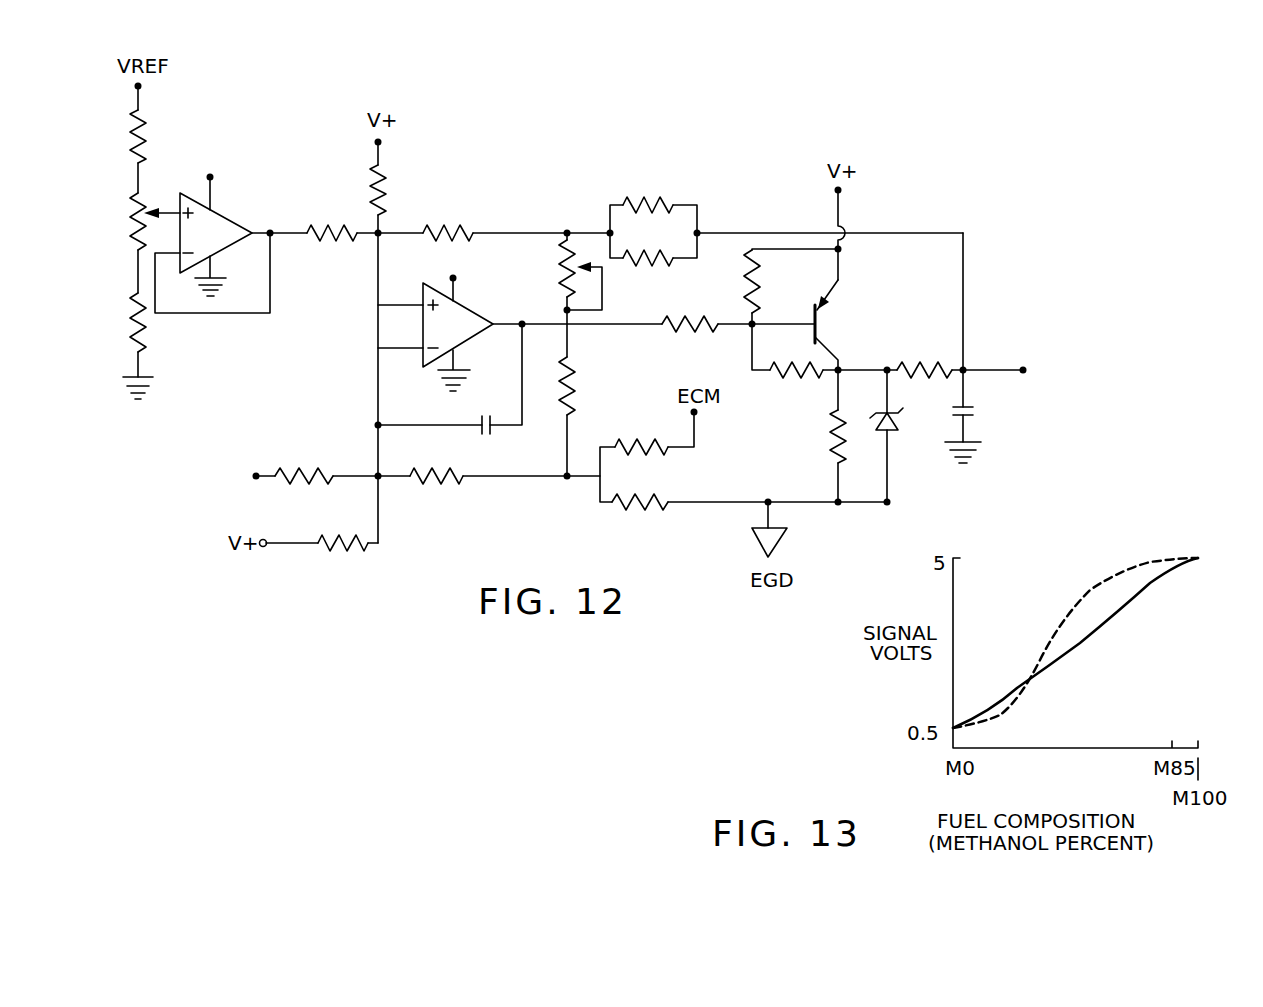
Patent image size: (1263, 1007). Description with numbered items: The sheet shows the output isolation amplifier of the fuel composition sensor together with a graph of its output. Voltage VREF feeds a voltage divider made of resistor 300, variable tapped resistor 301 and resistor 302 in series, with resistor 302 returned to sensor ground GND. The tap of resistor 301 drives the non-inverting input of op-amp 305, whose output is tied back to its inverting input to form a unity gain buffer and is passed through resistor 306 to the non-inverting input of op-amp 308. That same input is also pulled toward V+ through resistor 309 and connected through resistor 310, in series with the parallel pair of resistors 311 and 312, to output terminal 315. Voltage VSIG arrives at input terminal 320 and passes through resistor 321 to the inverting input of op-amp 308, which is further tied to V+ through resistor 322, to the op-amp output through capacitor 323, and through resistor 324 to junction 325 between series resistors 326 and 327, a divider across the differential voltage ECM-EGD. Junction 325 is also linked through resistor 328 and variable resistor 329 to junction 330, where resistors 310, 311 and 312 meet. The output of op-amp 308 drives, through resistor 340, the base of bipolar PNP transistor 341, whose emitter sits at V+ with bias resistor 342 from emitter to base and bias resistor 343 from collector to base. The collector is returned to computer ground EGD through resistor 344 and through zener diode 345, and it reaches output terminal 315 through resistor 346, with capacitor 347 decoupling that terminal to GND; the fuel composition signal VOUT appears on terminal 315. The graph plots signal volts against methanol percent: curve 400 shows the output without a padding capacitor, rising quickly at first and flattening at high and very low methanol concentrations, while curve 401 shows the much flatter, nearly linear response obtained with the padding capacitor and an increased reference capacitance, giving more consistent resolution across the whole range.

In FIG. 12, the resistor 300 is at (133, 138).
In FIG. 12, the variable tapped resistor 301 is at (130, 228).
In FIG. 12, the resistor 302 is at (130, 330).
In FIG. 12, the op-amp 305 is at (220, 230).
In FIG. 12, the resistor 306 is at (337, 240).
In FIG. 12, the op-amp 308 is at (462, 318).
In FIG. 12, the resistor 309 is at (392, 205).
In FIG. 12, the resistor 310 is at (450, 228).
In FIG. 12, the resistor 311 is at (650, 200).
In FIG. 12, the resistor 312 is at (645, 255).
In FIG. 12, the output terminal 315 is at (1020, 368).
In FIG. 12, the input terminal 320 is at (258, 472).
In FIG. 12, the resistor 321 is at (300, 470).
In FIG. 12, the resistor 322 is at (345, 548).
In FIG. 12, the capacitor 323 is at (495, 430).
In FIG. 12, the resistor 324 is at (425, 482).
In FIG. 12, the junction 325 is at (567, 480).
In FIG. 12, the resistor 326 is at (623, 442).
In FIG. 12, the resistor 327 is at (648, 498).
In FIG. 12, the resistor 328 is at (572, 395).
In FIG. 12, the variable resistor 329 is at (562, 262).
In FIG. 12, the junction 330 is at (565, 230).
In FIG. 12, the resistor 340 is at (683, 320).
In FIG. 12, the bipolar PNP transistor 341 is at (822, 330).
In FIG. 12, the bias resistor 342 is at (762, 296).
In FIG. 12, the bias resistor 343 is at (802, 375).
In FIG. 12, the resistor 344 is at (830, 440).
In FIG. 12, the zener diode 345 is at (897, 432).
In FIG. 12, the resistor 346 is at (918, 364).
In FIG. 12, the capacitor 347 is at (968, 416).
In FIG. 13, the curve 400 is at (1068, 618).
In FIG. 13, the curve 401 is at (1080, 640).